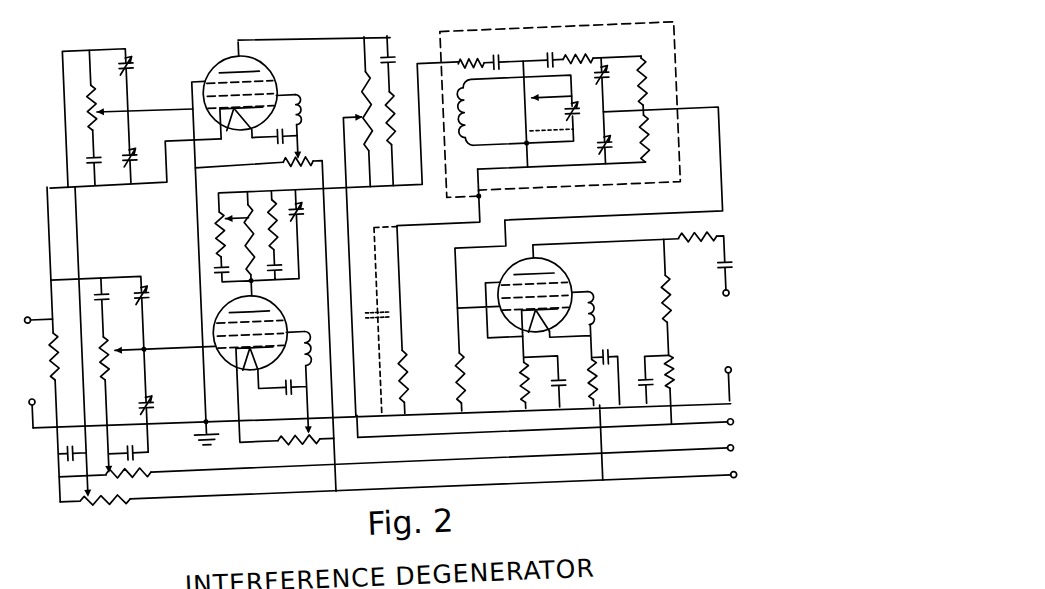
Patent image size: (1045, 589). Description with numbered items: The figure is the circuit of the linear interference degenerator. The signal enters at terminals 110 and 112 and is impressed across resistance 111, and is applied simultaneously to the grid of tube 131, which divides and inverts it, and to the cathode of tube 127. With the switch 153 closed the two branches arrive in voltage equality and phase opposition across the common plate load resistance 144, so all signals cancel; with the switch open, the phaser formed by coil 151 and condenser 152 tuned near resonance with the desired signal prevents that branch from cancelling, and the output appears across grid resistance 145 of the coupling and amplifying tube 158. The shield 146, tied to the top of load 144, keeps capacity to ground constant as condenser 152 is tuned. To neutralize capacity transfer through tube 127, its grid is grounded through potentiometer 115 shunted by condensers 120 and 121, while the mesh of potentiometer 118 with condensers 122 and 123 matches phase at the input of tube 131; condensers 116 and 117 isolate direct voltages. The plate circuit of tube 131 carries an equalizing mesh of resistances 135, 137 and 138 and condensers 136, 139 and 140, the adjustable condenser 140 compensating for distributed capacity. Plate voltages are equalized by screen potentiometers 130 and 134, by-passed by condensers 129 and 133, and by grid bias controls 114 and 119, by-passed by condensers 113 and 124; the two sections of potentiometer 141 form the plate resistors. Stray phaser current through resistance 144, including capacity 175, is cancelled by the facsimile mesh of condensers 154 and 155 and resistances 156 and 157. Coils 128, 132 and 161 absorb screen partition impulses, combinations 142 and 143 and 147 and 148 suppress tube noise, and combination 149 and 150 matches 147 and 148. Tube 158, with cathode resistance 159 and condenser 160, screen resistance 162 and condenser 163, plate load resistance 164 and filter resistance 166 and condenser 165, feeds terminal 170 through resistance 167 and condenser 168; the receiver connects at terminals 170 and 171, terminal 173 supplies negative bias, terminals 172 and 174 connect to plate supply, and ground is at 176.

The input terminal 110 is at (27, 323).
The resistance 111 is at (44, 357).
The input terminal 112 is at (30, 405).
The condenser 113 is at (58, 452).
The grid bias control 114 is at (96, 505).
The resistance potentiometer 115 is at (80, 114).
The condenser 116 is at (80, 163).
The condenser 117 is at (107, 291).
The potentiometer 118 is at (118, 351).
The grid bias control 119 is at (135, 478).
The condenser 120 is at (115, 78).
The condenser 121 is at (130, 153).
The condenser 122 is at (155, 304).
The condenser 123 is at (150, 402).
The condenser 124 is at (148, 457).
The tube 127 is at (262, 70).
The coil 128 is at (290, 88).
The by-pass condenser 129 is at (268, 140).
The screen potentiometer 130 is at (284, 166).
The tube 131 is at (273, 307).
The coil 132 is at (304, 330).
The by-pass condenser 133 is at (282, 388).
The screen potentiometer 134 is at (289, 440).
The resistance 135 is at (216, 216).
The condenser 136 is at (217, 272).
The resistance 137 is at (252, 268).
The resistance 138 is at (272, 220).
The condenser 139 is at (277, 267).
The adjustable condenser 140 is at (300, 196).
The potentiometer 141 is at (361, 92).
The condenser 142 is at (395, 59).
The resistance 143 is at (396, 140).
The common plate load resistance 144 is at (408, 354).
The grid resistance 145 is at (459, 382).
The shield 146 is at (449, 197).
The condenser 147 is at (483, 58).
The resistance 148 is at (495, 65).
The condenser 149 is at (544, 57).
The resistance 150 is at (580, 45).
The coil 151 is at (464, 143).
The condenser 152 is at (581, 110).
The switch 153 is at (531, 111).
The condenser 154 is at (609, 59).
The condenser 155 is at (602, 145).
The resistance 156 is at (645, 87).
The resistance 157 is at (646, 140).
The coupling and amplifying tube 158 is at (513, 266).
The cathode resistance 159 is at (517, 383).
The condenser 160 is at (551, 399).
The coil 161 is at (590, 296).
The screen resistance 162 is at (588, 366).
The condenser 163 is at (610, 353).
The plate load resistance 164 is at (663, 292).
The condenser 165 is at (634, 399).
The resistance 166 is at (683, 369).
The resistance 167 is at (686, 231).
The condenser 168 is at (708, 265).
The terminal 170 is at (722, 296).
The terminal 171 is at (723, 372).
The terminal 172 is at (727, 426).
The terminal 173 is at (727, 451).
The terminal 174 is at (731, 477).
The capacity 175 is at (384, 311).
The ground 176 is at (214, 442).